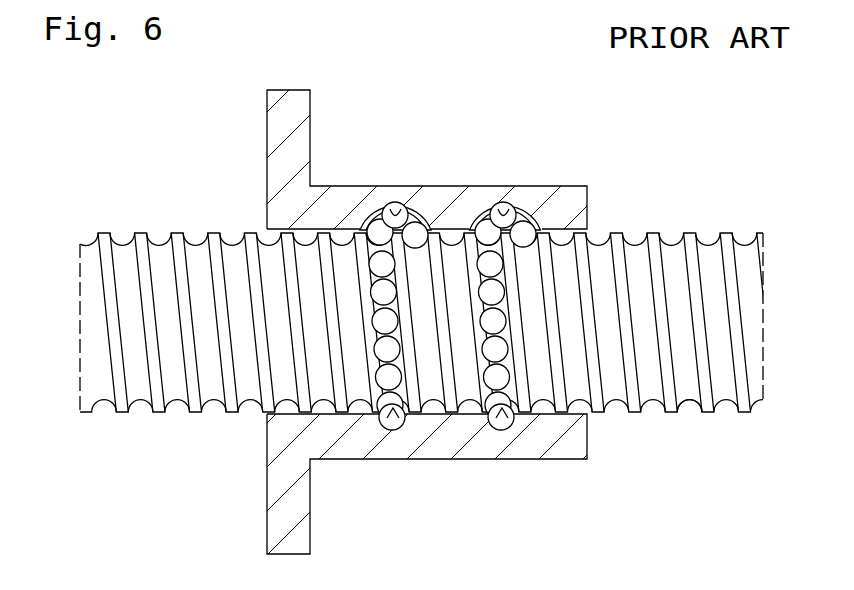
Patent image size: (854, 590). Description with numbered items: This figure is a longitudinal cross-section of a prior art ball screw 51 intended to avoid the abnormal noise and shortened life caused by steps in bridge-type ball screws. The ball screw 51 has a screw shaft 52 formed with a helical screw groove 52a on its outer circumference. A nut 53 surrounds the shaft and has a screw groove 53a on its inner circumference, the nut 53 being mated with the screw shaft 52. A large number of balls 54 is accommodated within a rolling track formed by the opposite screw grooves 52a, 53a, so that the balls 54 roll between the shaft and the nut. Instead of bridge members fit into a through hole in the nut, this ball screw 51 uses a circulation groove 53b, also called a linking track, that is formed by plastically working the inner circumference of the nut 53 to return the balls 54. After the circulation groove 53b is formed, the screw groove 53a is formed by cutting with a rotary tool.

The ball screw 51 is at (398, 129).
The screw shaft 52 is at (686, 232).
The screw groove 52a is at (688, 403).
The nut 53 is at (294, 107).
The screw groove 53a is at (396, 425).
The circulation groove 53b is at (396, 213).
The balls 54 is at (380, 381).